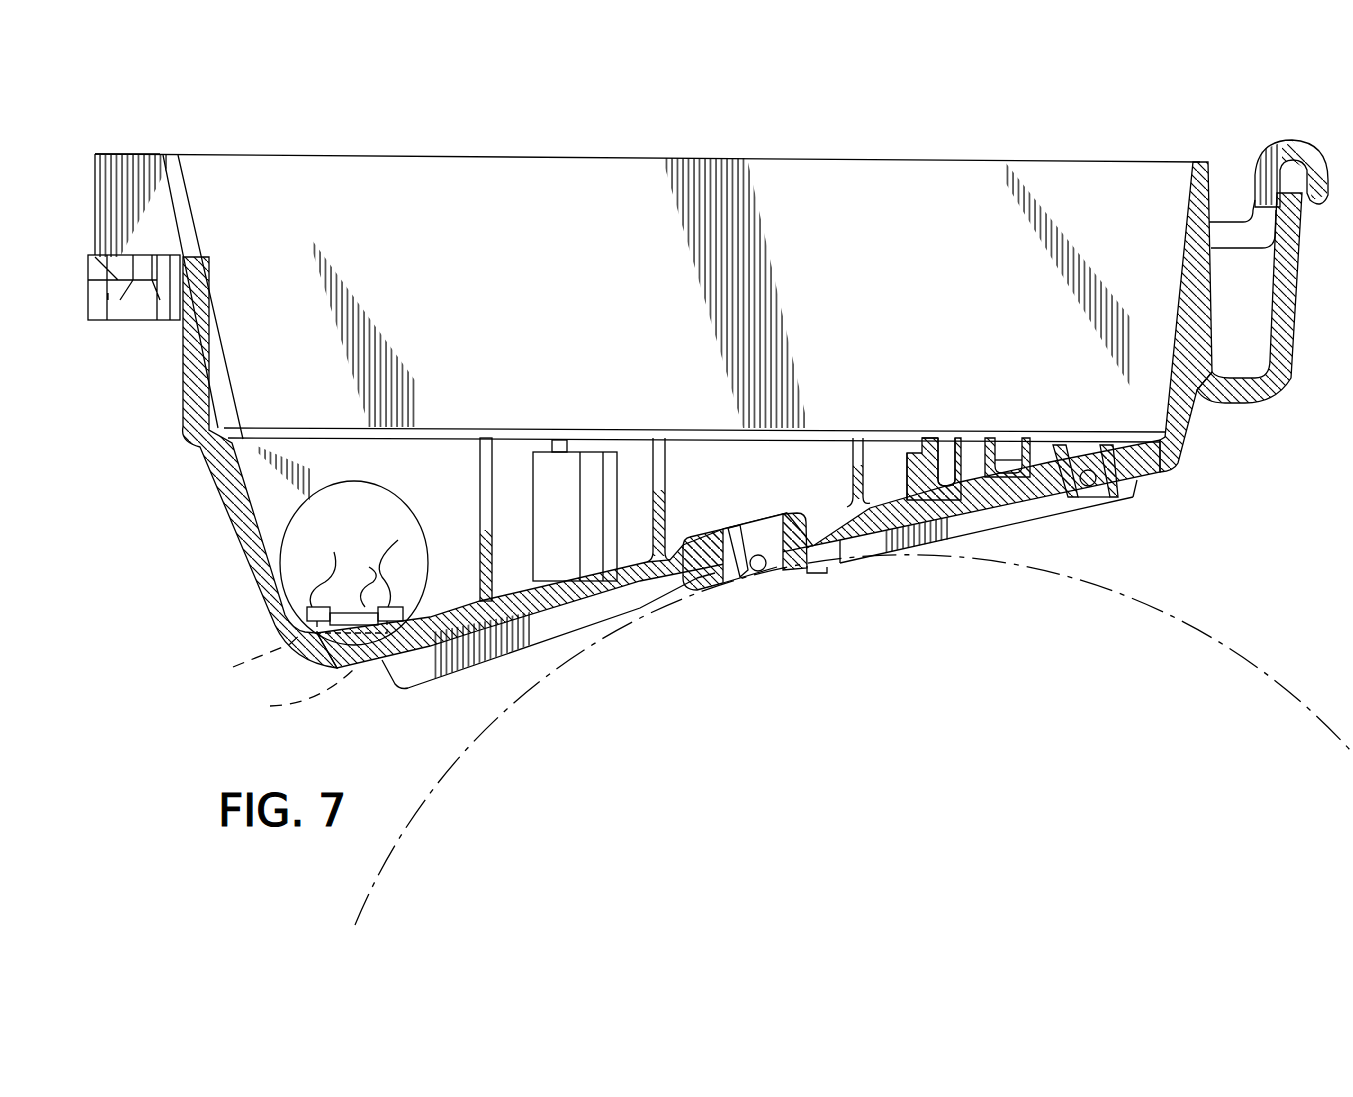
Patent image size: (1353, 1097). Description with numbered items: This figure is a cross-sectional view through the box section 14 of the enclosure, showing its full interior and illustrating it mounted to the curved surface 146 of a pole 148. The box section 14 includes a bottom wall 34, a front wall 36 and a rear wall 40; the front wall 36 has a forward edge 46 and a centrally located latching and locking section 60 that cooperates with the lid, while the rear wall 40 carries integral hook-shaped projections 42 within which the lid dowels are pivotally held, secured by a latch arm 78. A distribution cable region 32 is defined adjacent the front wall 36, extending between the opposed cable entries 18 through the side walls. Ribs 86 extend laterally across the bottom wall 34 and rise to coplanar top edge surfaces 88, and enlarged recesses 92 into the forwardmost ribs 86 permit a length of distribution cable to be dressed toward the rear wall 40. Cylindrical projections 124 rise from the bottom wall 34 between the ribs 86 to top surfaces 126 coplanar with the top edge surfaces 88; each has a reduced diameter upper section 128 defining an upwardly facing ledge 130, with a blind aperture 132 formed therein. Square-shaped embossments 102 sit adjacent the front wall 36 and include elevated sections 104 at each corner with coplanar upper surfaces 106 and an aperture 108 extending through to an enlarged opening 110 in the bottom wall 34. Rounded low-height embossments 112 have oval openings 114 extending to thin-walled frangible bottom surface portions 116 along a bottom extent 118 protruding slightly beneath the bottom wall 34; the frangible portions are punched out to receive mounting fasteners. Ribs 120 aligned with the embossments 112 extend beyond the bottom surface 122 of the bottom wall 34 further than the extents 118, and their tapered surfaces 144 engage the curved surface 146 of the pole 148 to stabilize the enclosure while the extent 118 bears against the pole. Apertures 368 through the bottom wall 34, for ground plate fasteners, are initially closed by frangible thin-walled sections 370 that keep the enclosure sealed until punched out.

The box section 14 is at (1094, 158).
The cable entries 18 is at (328, 500).
The distribution cable region 32 is at (273, 593).
The bottom wall 34 is at (826, 574).
The front wall 36 is at (183, 338).
The rear wall 40 is at (1226, 222).
The hook-shaped projections 42 is at (1322, 165).
The forward edge 46 is at (128, 154).
The latching and locking section 60 is at (95, 268).
The latch arm 78 is at (1305, 250).
The ribs 86 is at (907, 458).
The top edge surfaces 88 is at (482, 428).
The enlarged recesses 92 is at (480, 493).
The square-shaped embossments 102 is at (403, 614).
The elevated sections 104 is at (365, 576).
The upper surfaces 106 is at (357, 559).
The aperture 108 is at (246, 660).
The enlarged opening 110 is at (294, 697).
The rounded low-height embossments 112 is at (800, 513).
The oval openings 114 is at (738, 527).
The frangible bottom surface portions 116 is at (740, 580).
The bottom extent 118 is at (813, 570).
The ribs 120 is at (545, 631).
The bottom surface 122 is at (985, 527).
The cylindrical projections 124 is at (654, 498).
The top surfaces 126 is at (552, 428).
The reduced diameter upper section 128 is at (598, 488).
The upwardly facing ledge 130 is at (558, 450).
The blind aperture 132 is at (946, 436).
The tapered surfaces 144 is at (845, 565).
The curved surface 146 is at (1263, 643).
The pole 148 is at (1146, 608).
The apertures 368 is at (1093, 465).
The thin-walled sections 370 is at (1096, 500).